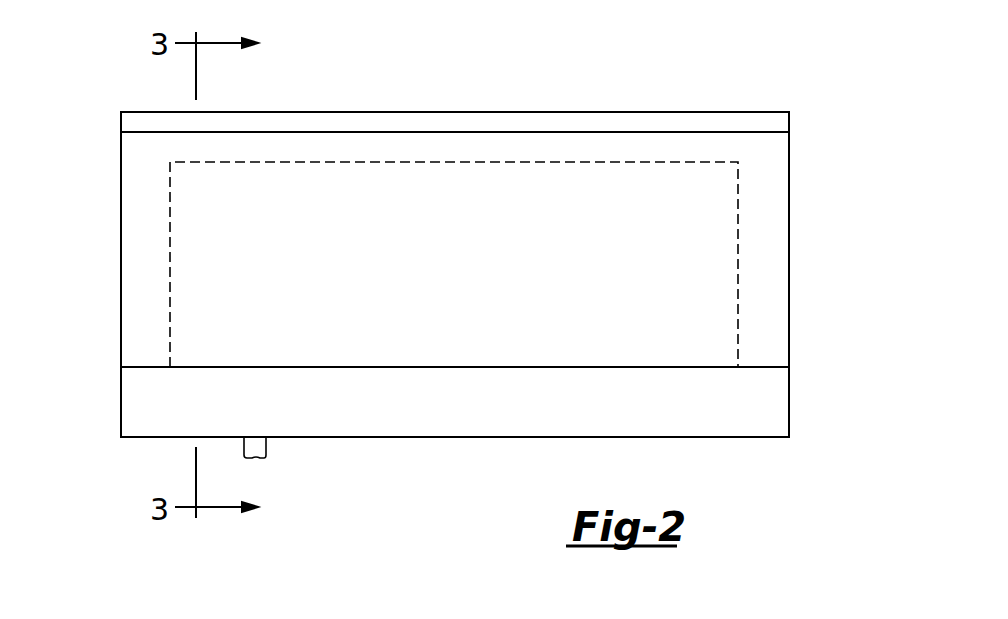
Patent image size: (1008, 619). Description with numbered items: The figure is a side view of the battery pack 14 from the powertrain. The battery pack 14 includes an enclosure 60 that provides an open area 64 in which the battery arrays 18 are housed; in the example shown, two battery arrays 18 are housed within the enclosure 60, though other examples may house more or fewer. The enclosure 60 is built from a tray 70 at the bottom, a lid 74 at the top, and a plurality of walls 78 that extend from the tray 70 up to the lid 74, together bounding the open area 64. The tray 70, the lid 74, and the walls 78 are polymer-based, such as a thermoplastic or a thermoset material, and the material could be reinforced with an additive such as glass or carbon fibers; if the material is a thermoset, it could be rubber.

The battery pack 14 is at (832, 142).
The battery arrays 18 is at (557, 161).
The enclosure 60 is at (789, 304).
The open area 64 is at (140, 165).
The tray 70 is at (728, 417).
The lid 74 is at (687, 112).
The walls 78 is at (789, 200).